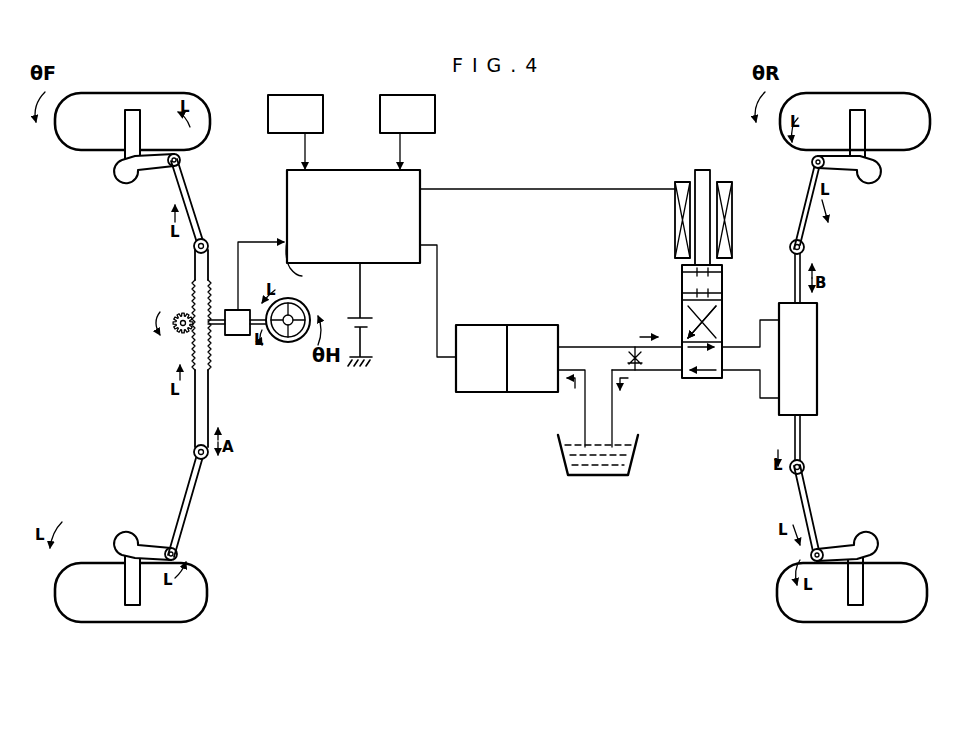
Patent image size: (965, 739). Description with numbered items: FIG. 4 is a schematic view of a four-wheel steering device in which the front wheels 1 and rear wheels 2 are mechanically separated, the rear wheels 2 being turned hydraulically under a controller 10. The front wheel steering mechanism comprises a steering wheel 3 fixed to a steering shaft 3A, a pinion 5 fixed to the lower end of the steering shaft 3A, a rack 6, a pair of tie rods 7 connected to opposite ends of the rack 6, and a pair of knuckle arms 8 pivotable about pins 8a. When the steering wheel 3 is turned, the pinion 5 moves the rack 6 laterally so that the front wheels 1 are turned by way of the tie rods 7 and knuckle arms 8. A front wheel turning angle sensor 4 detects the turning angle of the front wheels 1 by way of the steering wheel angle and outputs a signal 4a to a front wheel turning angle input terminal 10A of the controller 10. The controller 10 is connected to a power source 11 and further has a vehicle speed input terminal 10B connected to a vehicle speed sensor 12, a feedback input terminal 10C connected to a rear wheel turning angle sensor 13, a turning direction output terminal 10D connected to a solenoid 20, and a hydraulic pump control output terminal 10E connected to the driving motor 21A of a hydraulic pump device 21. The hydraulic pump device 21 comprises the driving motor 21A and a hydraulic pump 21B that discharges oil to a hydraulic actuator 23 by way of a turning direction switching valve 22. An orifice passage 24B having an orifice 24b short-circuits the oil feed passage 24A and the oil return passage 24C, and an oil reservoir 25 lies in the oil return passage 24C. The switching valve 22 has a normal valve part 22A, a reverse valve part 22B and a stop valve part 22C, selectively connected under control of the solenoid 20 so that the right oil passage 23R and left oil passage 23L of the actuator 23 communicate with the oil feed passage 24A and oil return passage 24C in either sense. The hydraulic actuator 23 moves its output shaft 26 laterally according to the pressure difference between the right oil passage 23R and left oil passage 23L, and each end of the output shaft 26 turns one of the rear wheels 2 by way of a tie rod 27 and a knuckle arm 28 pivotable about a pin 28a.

The front wheels 1 is at (73, 143).
The rear wheels 2 is at (908, 148).
The steering wheel 3 is at (288, 343).
The steering shaft 3A is at (220, 336).
The front wheel turning angle sensor 4 is at (240, 335).
The signal 4a is at (252, 236).
The pinion 5 is at (170, 340).
The rack 6 is at (194, 405).
The tie rods 7 is at (190, 190).
The knuckle arms 8 is at (163, 165).
The pins 8a is at (128, 176).
The controller 10 is at (353, 216).
The front wheel turning angle input terminal 10A is at (313, 265).
The vehicle speed input terminal 10B is at (300, 162).
The feedback input terminal 10C is at (405, 162).
The turning direction output terminal 10D is at (425, 192).
The hydraulic pump control output terminal 10E is at (430, 243).
The power source 11 is at (372, 322).
The vehicle speed sensor 12 is at (295, 114).
The rear wheel turning angle sensor 13 is at (407, 114).
The solenoid 20 is at (672, 214).
The hydraulic pump device 21 is at (470, 400).
The driving motor 21A is at (484, 322).
The hydraulic pump 21B is at (538, 322).
The turning direction switching valve 22 is at (680, 280).
The normal valve part 22A is at (718, 380).
The reverse valve part 22B is at (726, 318).
The stop valve part 22C is at (722, 280).
The hydraulic actuator 23 is at (812, 380).
The left oil passage 23L is at (738, 400).
The right oil passage 23R is at (790, 330).
The oil feed passage 24A is at (590, 345).
The orifice 24b is at (635, 340).
The orifice passage 24B is at (640, 372).
The oil return passage 24C is at (582, 408).
The oil reservoir 25 is at (596, 476).
The output shaft 26 is at (805, 258).
The tie rod 27 is at (803, 215).
The knuckle arm 28 is at (830, 178).
The pin 28a is at (868, 178).